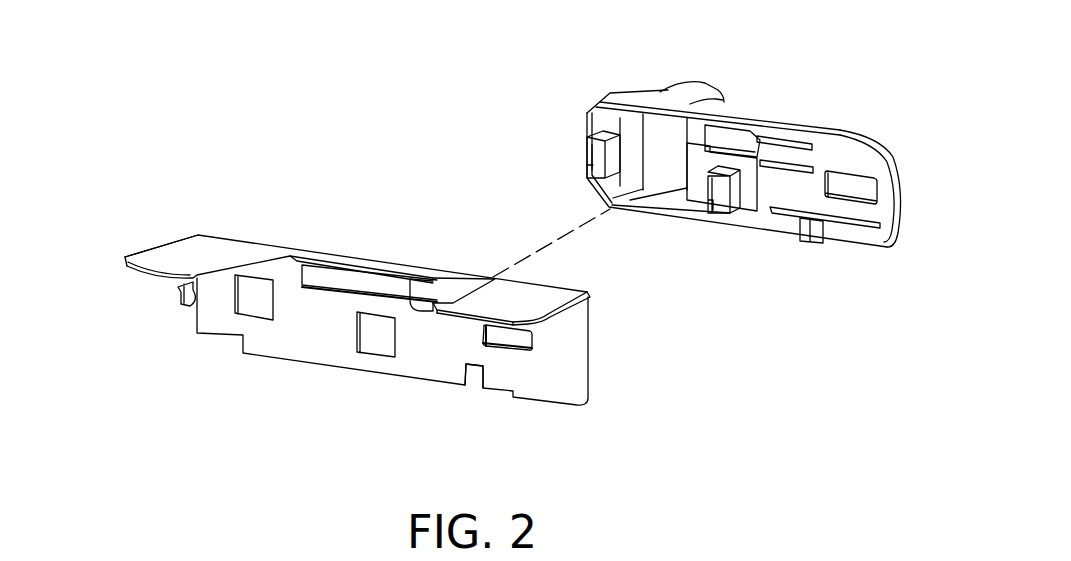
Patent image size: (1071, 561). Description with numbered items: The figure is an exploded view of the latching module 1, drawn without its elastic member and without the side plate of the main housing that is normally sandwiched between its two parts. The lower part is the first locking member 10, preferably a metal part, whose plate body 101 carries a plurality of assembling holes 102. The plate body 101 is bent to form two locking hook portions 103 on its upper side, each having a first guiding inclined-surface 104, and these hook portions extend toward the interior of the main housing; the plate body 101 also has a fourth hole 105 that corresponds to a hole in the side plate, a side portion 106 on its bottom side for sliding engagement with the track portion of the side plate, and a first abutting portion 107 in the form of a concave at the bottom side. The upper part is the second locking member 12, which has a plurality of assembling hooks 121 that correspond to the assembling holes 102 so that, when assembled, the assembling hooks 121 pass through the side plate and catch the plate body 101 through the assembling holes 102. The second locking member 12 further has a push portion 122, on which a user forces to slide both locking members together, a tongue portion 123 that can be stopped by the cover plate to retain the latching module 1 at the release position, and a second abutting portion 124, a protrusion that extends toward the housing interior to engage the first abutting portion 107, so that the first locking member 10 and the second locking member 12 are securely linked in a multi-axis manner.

The latching module 1 is at (141, 124).
The first locking member 10 is at (168, 234).
The second locking member 12 is at (581, 111).
The plate body 101 is at (420, 348).
The assembling holes 102 is at (255, 300).
The locking hook portions 103 is at (160, 273).
The first guiding inclined-surface 104 is at (427, 306).
The fourth hole 105 is at (315, 278).
The side portion 106 is at (351, 362).
The first abutting portion 107 is at (477, 380).
The assembling hooks 121 is at (592, 153).
The push portion 122 is at (693, 95).
The tongue portion 123 is at (733, 140).
The second abutting portion 124 is at (803, 238).